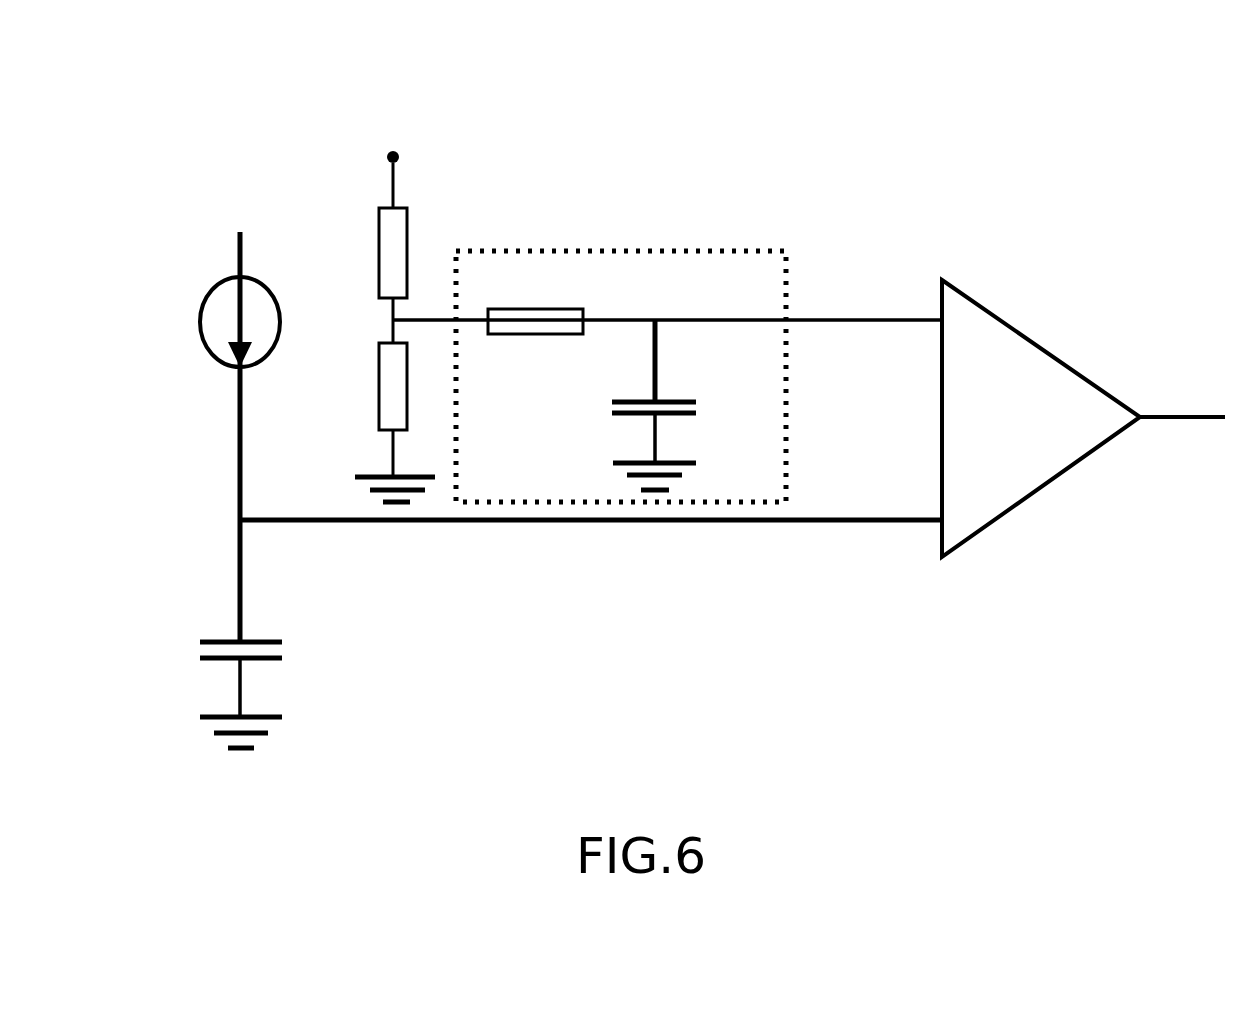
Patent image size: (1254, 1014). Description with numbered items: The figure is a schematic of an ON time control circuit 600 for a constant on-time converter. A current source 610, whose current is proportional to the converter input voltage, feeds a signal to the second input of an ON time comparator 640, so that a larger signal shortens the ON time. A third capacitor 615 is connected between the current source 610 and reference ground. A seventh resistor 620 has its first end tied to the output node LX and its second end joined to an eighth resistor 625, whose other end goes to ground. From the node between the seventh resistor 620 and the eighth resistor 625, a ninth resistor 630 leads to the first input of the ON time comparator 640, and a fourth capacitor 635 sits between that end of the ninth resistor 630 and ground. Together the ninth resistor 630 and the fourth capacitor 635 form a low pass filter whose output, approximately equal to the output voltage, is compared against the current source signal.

The ON time control circuit 600 is at (585, 37).
The current source 610 is at (213, 290).
The third capacitor 615 is at (203, 655).
The seventh resistor 620 is at (407, 235).
The eighth resistor 625 is at (379, 358).
The ninth resistor 630 is at (573, 307).
The fourth capacitor 635 is at (686, 414).
The ON time comparator 640 is at (1020, 333).